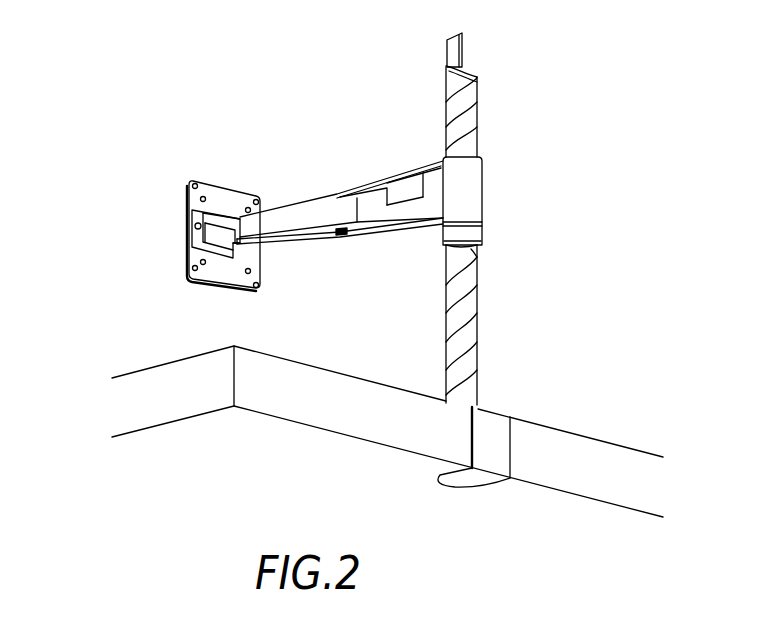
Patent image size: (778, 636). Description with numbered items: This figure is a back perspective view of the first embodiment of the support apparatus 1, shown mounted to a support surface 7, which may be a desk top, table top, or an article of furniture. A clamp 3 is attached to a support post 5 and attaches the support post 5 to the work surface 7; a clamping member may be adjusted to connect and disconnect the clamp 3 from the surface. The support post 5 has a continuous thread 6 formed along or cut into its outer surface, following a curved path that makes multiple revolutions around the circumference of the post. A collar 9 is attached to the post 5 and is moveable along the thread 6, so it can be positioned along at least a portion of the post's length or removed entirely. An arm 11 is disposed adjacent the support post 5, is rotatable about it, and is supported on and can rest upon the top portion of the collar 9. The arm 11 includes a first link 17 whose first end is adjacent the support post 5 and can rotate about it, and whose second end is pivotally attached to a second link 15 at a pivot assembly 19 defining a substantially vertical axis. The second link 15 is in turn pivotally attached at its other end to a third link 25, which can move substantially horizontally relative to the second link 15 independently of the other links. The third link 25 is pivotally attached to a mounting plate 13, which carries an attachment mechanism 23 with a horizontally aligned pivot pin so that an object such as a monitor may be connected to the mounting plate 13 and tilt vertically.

The support apparatus 1 is at (421, 331).
The clamp 3 is at (503, 447).
The support post 5 is at (470, 280).
The thread 6 is at (473, 328).
The support surface 7 is at (580, 433).
The collar 9 is at (484, 233).
The arm 11 is at (365, 150).
The mounting plate 13 is at (203, 180).
The second link 15 is at (292, 238).
The first link 17 is at (473, 188).
The pivot assembly 19 is at (345, 238).
The attachment mechanism 23 is at (192, 227).
The third link 25 is at (238, 227).